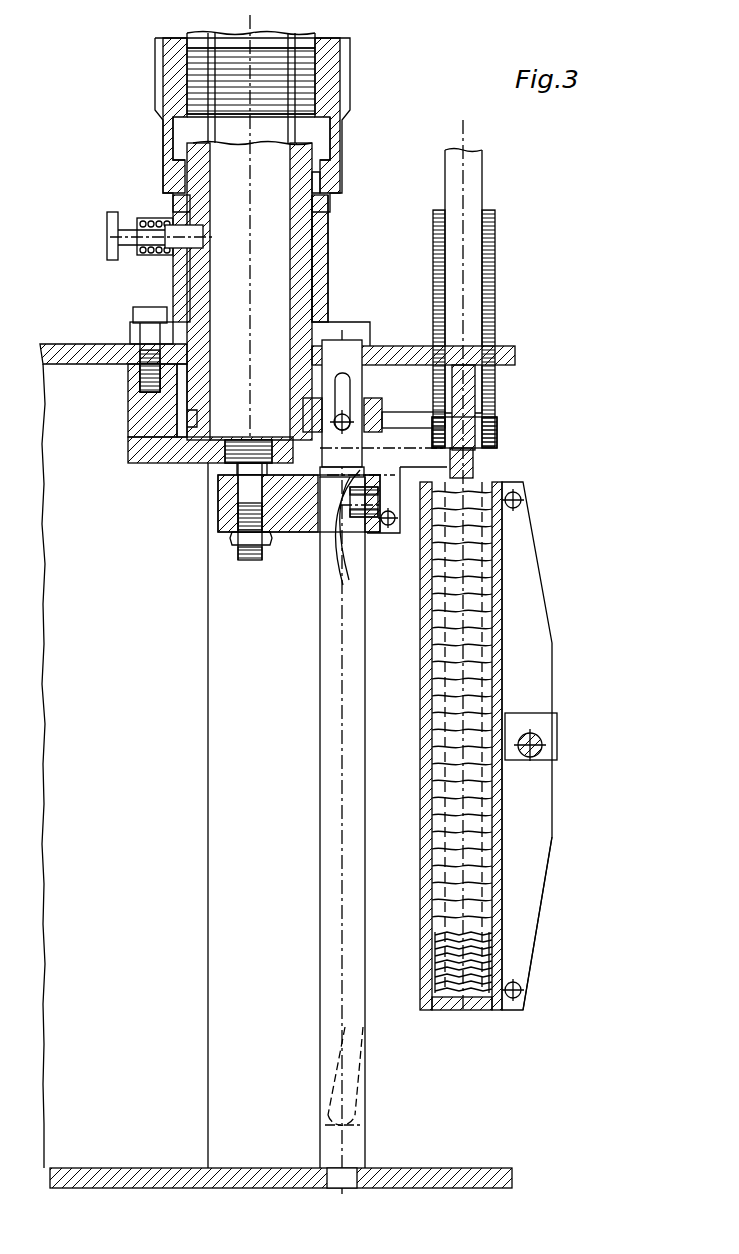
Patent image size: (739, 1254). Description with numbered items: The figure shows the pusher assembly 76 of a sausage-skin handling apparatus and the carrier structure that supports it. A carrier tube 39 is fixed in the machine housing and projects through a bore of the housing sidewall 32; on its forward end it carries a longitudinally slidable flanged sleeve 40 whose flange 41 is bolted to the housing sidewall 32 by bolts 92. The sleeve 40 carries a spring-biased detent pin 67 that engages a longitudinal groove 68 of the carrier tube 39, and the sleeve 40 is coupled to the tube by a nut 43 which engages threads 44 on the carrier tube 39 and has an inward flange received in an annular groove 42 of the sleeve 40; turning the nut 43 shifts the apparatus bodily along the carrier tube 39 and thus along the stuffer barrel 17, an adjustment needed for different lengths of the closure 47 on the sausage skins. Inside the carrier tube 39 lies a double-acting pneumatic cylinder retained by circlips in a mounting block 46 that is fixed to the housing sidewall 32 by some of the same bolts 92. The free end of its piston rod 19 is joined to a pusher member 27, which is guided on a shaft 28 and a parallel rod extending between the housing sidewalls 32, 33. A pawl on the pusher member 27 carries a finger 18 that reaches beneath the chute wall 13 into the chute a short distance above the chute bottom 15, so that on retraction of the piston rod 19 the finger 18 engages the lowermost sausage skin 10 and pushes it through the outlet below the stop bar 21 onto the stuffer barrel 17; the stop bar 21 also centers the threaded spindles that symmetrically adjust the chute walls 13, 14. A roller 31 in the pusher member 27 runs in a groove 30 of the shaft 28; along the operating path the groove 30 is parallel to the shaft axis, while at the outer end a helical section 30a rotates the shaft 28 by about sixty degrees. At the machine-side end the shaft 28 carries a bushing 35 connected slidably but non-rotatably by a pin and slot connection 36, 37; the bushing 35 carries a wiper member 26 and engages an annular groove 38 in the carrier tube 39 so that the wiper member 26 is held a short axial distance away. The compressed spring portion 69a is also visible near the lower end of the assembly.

The sausage skin 10 is at (495, 228).
The chute wall 13 is at (428, 626).
The chute wall 14 is at (500, 637).
The chute bottom 15 is at (522, 943).
The stuffer barrel 17 is at (473, 188).
The finger 18 is at (447, 461).
The piston rod 19 is at (235, 520).
The stop bar 21 is at (476, 399).
The wiper member 26 is at (497, 424).
The pusher member 27 is at (292, 537).
The shaft 28 is at (333, 798).
The groove 30 is at (354, 808).
The helical groove section 30a is at (352, 1080).
The roller 31 is at (353, 530).
The housing sidewall 32 is at (397, 346).
The housing sidewall 33 is at (440, 1177).
The bushing 35 is at (372, 405).
The pin of pin and slot connection 36 is at (346, 417).
The slot of pin and slot connection 37 is at (340, 387).
The annular groove 38 is at (183, 422).
The carrier tube 39 is at (197, 300).
The flanged sleeve 40 is at (184, 207).
The flange 41 is at (143, 342).
The annular groove 42 is at (331, 198).
The nut 43 is at (167, 139).
The threads 44 is at (310, 84).
The mounting block 46 is at (143, 423).
The closure 47 is at (490, 998).
The detent pin 67 is at (110, 233).
The longitudinal groove 68 is at (200, 262).
The compressed spring portion 69a is at (467, 1004).
The pusher assembly 76 is at (293, 622).
The bolts 92 is at (143, 314).